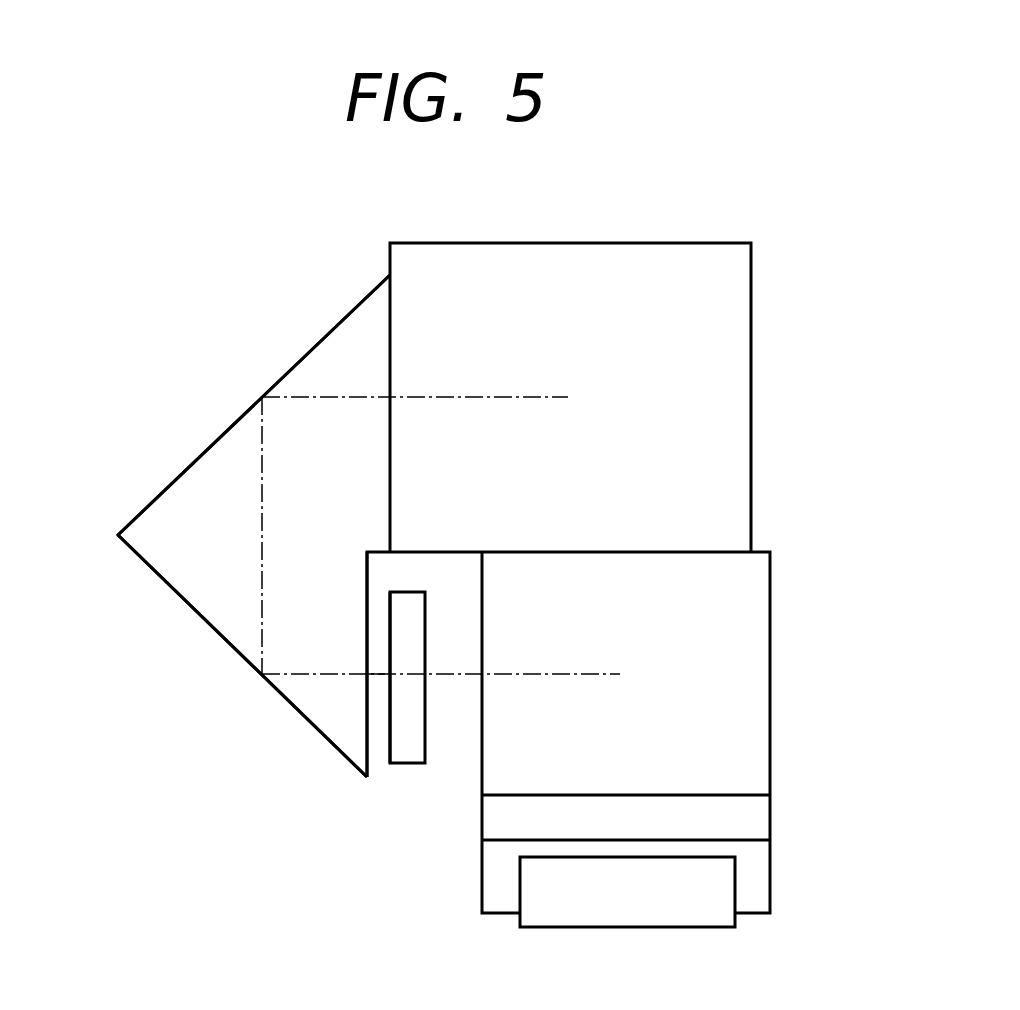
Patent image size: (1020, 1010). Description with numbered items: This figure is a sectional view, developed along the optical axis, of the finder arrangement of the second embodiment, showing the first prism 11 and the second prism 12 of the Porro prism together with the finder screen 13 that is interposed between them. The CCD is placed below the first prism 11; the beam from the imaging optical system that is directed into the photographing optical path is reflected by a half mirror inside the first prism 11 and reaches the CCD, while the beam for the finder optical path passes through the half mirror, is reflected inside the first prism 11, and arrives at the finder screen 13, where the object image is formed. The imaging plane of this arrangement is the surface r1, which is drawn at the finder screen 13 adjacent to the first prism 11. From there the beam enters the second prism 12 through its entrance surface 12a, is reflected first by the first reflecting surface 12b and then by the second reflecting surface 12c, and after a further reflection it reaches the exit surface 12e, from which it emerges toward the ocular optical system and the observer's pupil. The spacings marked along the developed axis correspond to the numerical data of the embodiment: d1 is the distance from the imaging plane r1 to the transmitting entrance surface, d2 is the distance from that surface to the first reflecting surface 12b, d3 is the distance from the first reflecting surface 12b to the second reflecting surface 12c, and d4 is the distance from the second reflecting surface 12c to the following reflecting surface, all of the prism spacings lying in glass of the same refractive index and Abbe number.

The second prism 12 is at (250, 318).
The entrance surface 12a is at (365, 742).
The first reflecting surface 12b is at (185, 602).
The second reflecting surface 12c is at (196, 460).
The exit surface 12e is at (723, 390).
The first prism 11 is at (826, 624).
The finder screen 13 is at (410, 763).
The imaging plane surface r1 is at (386, 755).
The CCD image sensor CCD is at (645, 903).
The surface spacing d1 is at (380, 676).
The surface spacing d2 is at (300, 676).
The surface spacing d3 is at (263, 551).
The surface spacing d4 is at (305, 398).